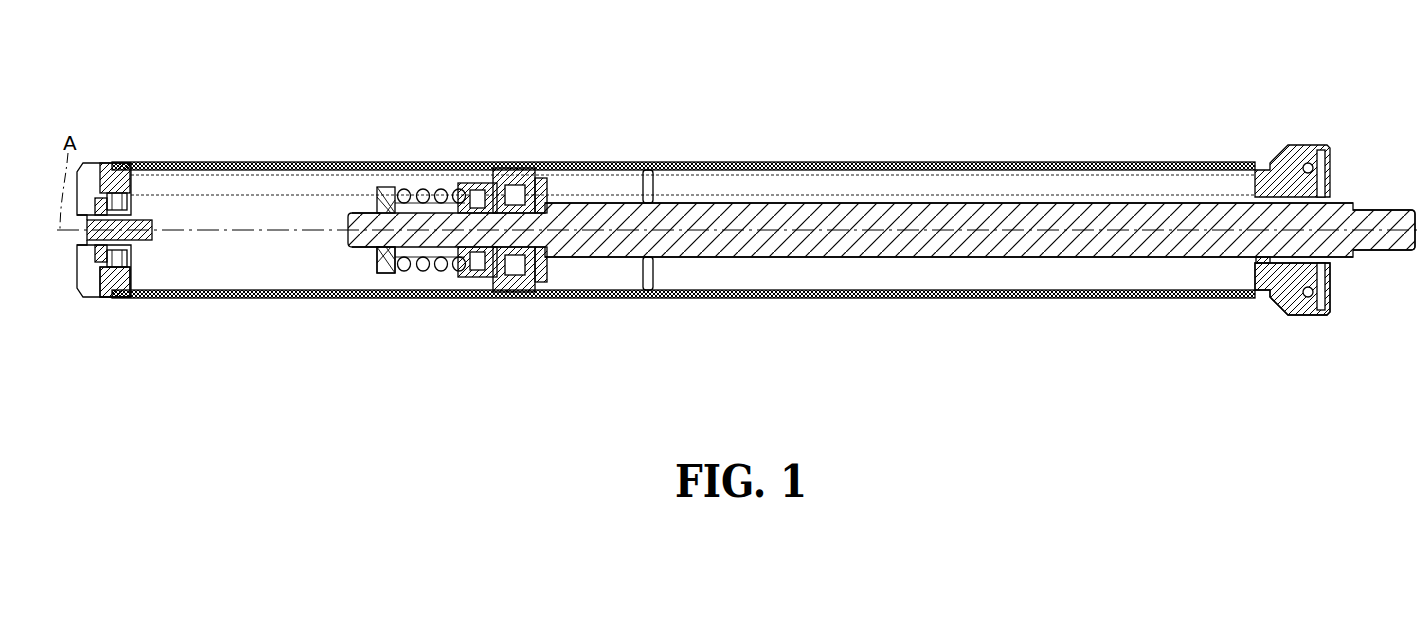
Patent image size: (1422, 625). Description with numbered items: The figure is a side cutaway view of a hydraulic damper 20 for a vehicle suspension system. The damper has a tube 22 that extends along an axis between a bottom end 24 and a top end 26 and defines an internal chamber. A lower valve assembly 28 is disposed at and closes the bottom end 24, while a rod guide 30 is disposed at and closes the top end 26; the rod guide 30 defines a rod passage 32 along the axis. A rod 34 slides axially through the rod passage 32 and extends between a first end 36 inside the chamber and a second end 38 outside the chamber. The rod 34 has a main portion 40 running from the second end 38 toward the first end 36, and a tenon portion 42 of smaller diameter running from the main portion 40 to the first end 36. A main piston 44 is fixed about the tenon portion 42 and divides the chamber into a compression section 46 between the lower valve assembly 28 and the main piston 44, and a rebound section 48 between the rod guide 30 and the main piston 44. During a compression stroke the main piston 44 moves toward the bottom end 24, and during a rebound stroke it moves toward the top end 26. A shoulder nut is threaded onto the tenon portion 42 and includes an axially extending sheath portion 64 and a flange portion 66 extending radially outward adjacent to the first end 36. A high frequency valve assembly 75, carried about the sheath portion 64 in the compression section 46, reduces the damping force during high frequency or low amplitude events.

The hydraulic damper 20 is at (866, 95).
The tube 22 is at (1030, 161).
The bottom end 24 is at (128, 162).
The top end 26 is at (1267, 163).
The lower valve assembly 28 is at (118, 302).
The rod guide 30 is at (1297, 314).
The rod passage 32 is at (1262, 254).
The rod 34 is at (695, 200).
The first end 36 is at (348, 224).
The second end 38 is at (1420, 200).
The main portion 40 is at (687, 238).
The tenon portion 42 is at (353, 242).
The main piston 44 is at (512, 164).
The compression section 46 is at (242, 269).
The rebound section 48 is at (616, 286).
The sheath portion 64 is at (418, 258).
The flange portion 66 is at (388, 274).
The high frequency valve assembly 75 is at (470, 178).